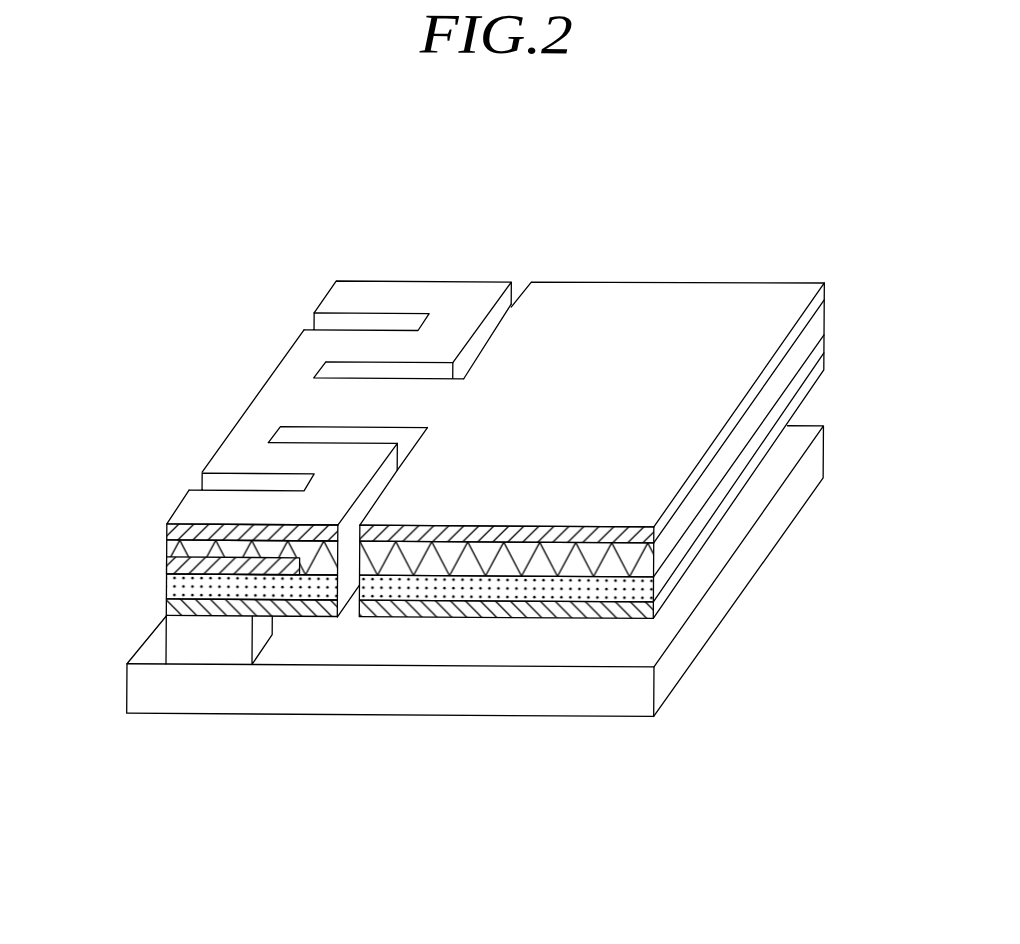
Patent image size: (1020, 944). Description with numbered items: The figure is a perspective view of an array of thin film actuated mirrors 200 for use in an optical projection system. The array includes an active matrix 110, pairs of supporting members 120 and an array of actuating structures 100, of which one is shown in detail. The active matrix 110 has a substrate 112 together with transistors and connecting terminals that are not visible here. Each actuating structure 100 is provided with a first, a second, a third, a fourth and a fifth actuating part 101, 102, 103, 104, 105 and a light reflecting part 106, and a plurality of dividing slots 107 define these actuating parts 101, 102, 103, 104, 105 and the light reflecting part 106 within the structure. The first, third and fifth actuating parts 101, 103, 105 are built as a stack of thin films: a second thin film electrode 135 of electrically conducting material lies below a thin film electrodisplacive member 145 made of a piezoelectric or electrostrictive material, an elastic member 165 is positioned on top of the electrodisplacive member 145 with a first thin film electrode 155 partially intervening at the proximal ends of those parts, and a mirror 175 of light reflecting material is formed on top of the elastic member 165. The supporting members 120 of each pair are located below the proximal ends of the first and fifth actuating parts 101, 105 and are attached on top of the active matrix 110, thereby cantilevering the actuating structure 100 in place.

The array of thin film actuated mirrors 200 is at (722, 124).
The actuating structure 100 is at (838, 284).
The first actuating part 101 is at (250, 512).
The second actuating part 102 is at (300, 461).
The third actuating part 103 is at (319, 401).
The fourth actuating part 104 is at (374, 353).
The fifth actuating part 105 is at (400, 307).
The light reflecting part 106 is at (633, 359).
The dividing slots 107 is at (403, 371).
The active matrix 110 is at (110, 664).
The substrate 112 is at (505, 705).
The supporting members 120 is at (203, 654).
The second thin film electrode 135 is at (298, 613).
The thin film electrodisplacive member 145 is at (180, 594).
The first thin film electrode 155 is at (180, 564).
The elastic member 165 is at (327, 563).
The mirror 175 is at (180, 534).